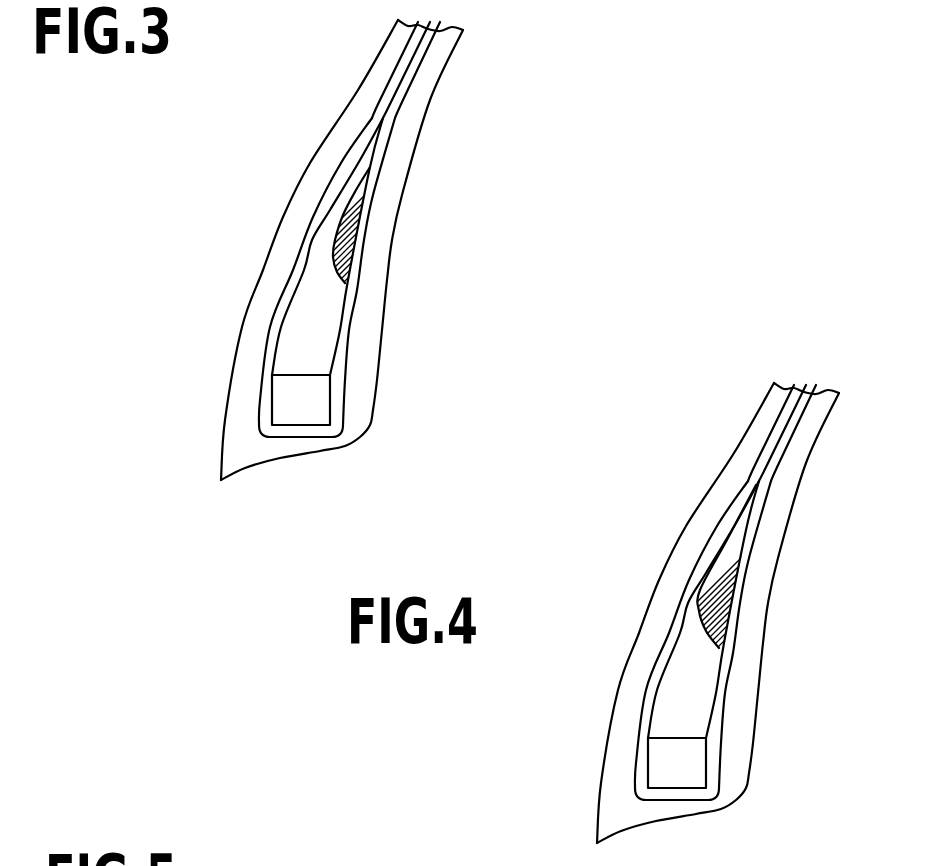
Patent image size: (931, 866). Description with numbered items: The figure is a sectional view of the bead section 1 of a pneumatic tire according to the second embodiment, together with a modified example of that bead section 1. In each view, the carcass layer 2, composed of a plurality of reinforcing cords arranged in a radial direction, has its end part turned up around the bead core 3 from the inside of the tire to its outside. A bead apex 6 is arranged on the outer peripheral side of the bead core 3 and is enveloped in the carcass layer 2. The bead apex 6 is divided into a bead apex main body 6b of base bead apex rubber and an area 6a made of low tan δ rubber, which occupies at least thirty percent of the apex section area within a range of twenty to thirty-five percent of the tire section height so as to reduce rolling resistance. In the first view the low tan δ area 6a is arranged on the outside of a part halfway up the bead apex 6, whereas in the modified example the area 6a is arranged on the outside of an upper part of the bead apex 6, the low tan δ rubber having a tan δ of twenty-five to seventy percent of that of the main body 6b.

In FIG. 3, the bead section 1 is at (382, 373).
In FIG. 4, the bead section 1 is at (757, 732).
In FIG. 3, the carcass layer 2 is at (388, 101).
In FIG. 4, the carcass layer 2 is at (762, 467).
In FIG. 3, the bead core 3 is at (290, 402).
In FIG. 4, the bead core 3 is at (660, 760).
In FIG. 3, the bead apex 6 is at (293, 272).
In FIG. 4, the bead apex 6 is at (677, 610).
In FIG. 3, the low tan δ area 6a is at (347, 208).
In FIG. 4, the low tan δ area 6a is at (720, 554).
In FIG. 3, the bead apex main body 6b is at (297, 327).
In FIG. 4, the bead apex main body 6b is at (673, 683).